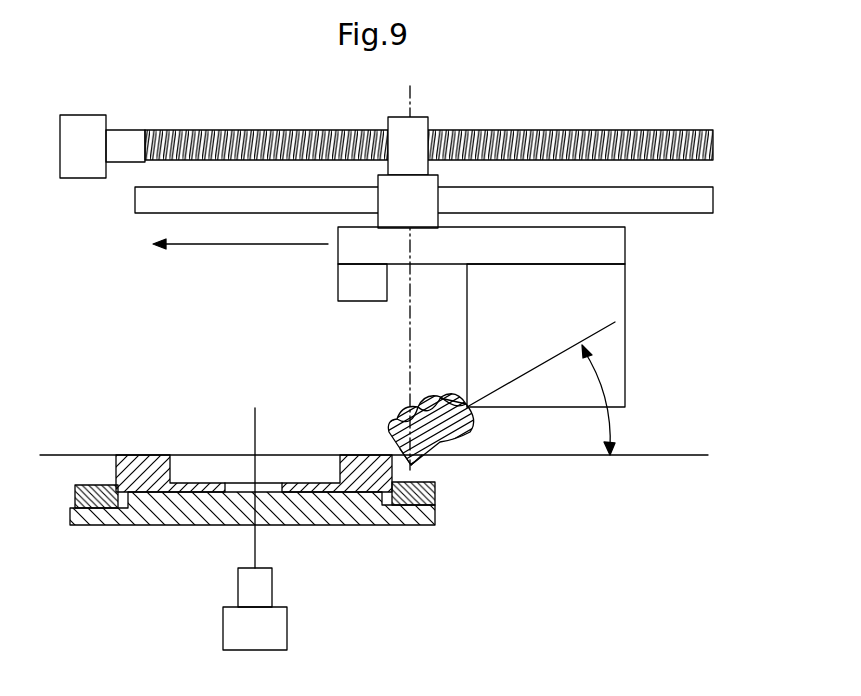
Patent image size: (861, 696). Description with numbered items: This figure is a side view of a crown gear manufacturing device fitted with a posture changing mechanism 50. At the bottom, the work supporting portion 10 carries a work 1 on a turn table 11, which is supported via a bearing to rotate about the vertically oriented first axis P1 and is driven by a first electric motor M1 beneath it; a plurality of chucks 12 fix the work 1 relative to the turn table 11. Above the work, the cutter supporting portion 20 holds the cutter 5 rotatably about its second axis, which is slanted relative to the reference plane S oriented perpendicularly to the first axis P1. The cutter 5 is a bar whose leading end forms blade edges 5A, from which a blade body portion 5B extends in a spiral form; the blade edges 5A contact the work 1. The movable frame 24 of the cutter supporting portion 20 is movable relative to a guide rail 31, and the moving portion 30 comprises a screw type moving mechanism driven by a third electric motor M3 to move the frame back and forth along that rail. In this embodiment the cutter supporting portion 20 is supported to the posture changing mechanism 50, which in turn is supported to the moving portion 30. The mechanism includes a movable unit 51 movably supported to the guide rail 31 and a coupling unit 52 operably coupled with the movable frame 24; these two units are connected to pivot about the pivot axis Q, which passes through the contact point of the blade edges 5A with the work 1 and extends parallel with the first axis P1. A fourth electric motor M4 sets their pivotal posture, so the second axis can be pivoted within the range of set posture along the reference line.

The third electric motor M3 is at (82, 120).
The moving portion 30 is at (286, 108).
The guide rail 31 is at (140, 197).
The pivot axis Q is at (407, 265).
The posture changing mechanism 50 is at (389, 229).
The movable unit 51 is at (388, 188).
The coupling unit 52 is at (338, 263).
The fourth electric motor M4 is at (352, 302).
The cutter supporting portion 20 is at (596, 335).
The movable frame 24 is at (625, 293).
The cutter 5 is at (420, 397).
The blade edges 5A is at (398, 446).
The blade body portion 5B is at (458, 387).
The reference plane S is at (552, 457).
The work 1 is at (145, 456).
The work supporting portion 10 is at (271, 501).
The turn table 11 is at (338, 523).
The chucks 12 is at (97, 485).
The first axis P1 is at (257, 408).
The first electric motor M1 is at (283, 624).